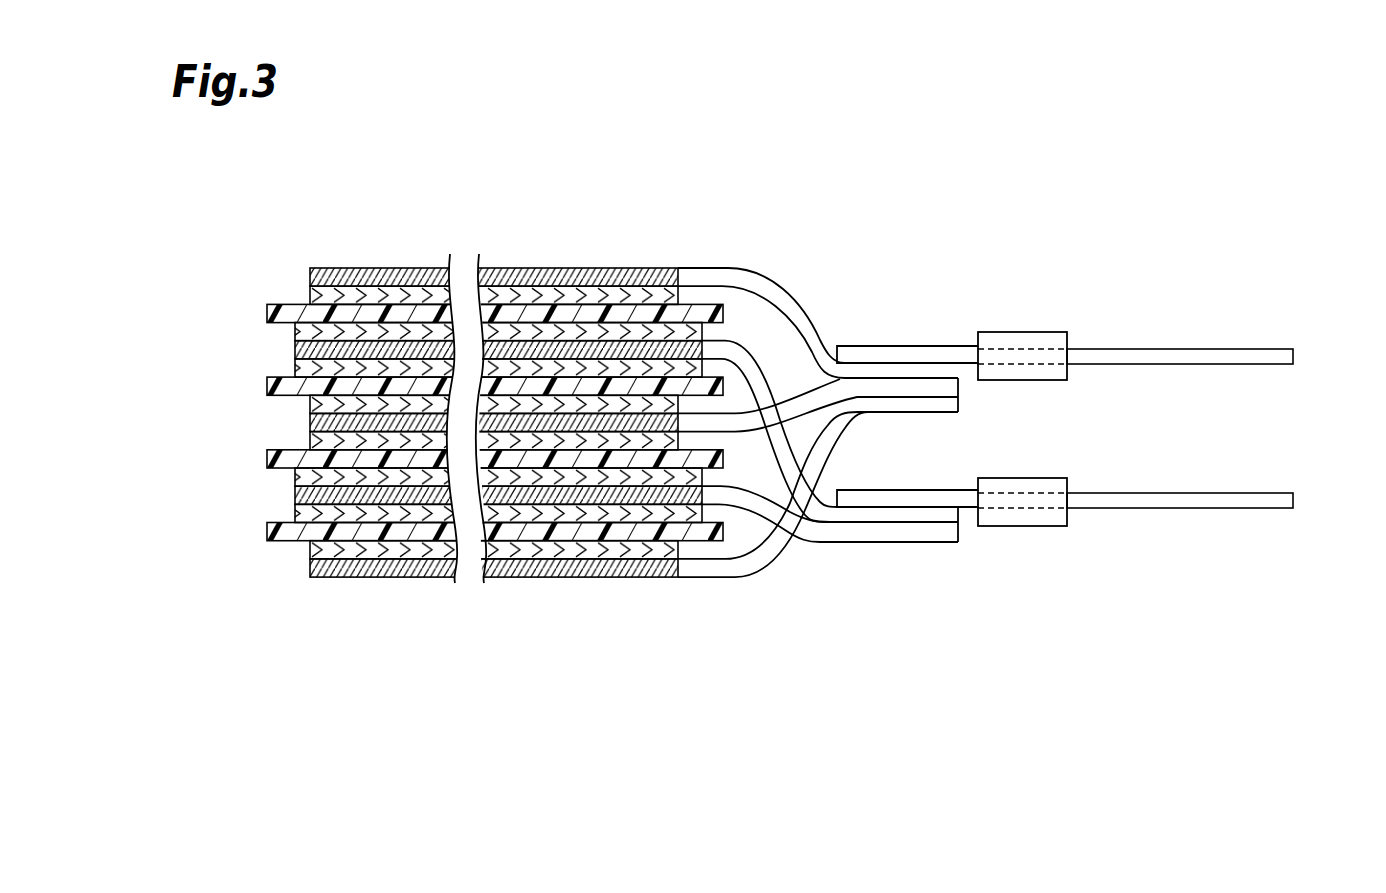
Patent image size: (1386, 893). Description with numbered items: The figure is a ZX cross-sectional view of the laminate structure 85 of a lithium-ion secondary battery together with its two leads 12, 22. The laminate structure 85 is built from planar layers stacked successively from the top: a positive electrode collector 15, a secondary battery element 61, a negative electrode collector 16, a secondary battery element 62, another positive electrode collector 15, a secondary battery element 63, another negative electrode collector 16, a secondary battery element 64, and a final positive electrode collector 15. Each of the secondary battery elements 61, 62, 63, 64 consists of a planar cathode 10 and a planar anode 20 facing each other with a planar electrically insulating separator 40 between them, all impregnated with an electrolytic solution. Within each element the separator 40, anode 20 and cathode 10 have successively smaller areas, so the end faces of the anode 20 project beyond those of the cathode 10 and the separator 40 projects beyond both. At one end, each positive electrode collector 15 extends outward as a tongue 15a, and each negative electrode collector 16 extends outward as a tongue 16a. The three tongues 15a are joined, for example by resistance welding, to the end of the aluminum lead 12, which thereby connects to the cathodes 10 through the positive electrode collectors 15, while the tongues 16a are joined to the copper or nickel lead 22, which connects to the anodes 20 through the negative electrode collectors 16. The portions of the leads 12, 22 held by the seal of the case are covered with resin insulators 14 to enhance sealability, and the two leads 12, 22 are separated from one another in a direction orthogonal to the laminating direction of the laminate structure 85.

The laminate structure 85 is at (421, 370).
The positive electrode collector 15 is at (310, 275).
The negative electrode collector 16 is at (295, 350).
The cathode 10 is at (310, 298).
The separator 40 is at (267, 315).
The anode 20 is at (295, 334).
The secondary battery element 61 is at (216, 287).
The secondary battery element 62 is at (216, 359).
The secondary battery element 63 is at (216, 431).
The secondary battery element 64 is at (450, 531).
The tongue 15a is at (787, 285).
The tongue 16a is at (772, 380).
The lead 12 is at (1294, 356).
The lead 22 is at (1294, 500).
The insulator 14 is at (1021, 332).